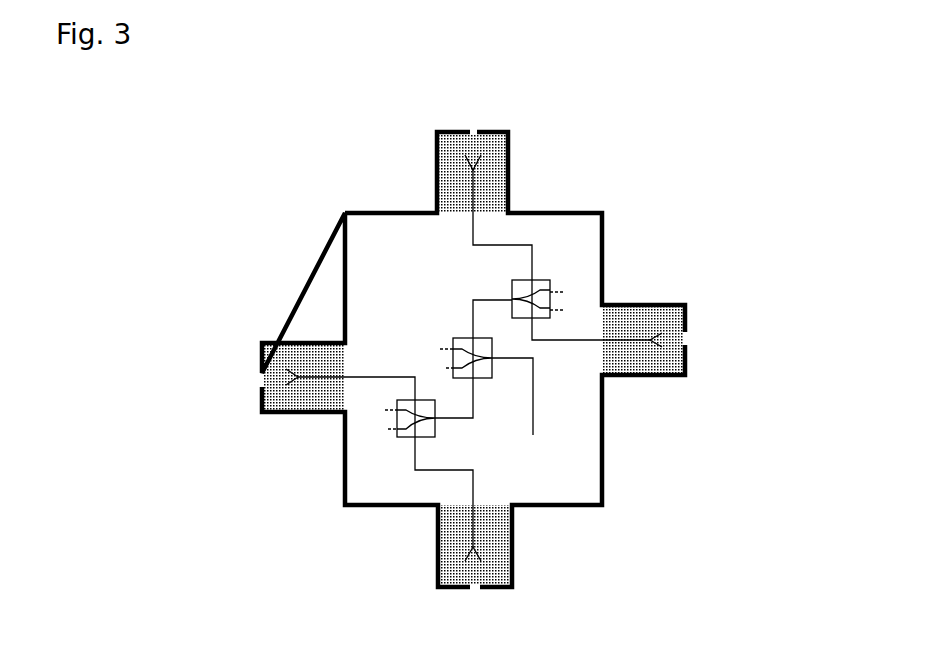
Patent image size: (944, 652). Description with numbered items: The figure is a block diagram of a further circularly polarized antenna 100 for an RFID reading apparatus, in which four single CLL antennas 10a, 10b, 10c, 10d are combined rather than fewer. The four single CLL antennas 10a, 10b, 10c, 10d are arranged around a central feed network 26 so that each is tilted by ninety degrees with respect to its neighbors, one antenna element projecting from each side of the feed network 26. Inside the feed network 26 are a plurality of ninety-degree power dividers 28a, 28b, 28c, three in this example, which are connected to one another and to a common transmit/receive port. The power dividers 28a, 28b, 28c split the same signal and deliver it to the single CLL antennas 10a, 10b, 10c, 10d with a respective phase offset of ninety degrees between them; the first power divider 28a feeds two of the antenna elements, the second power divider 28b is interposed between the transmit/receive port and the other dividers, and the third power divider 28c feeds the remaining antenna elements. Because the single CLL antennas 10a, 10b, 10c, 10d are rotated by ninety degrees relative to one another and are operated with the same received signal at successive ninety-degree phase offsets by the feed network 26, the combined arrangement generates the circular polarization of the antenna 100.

The circularly polarized antenna 100 is at (491, 320).
The feed network 26 is at (473, 359).
The single CLL antenna 10a is at (427, 190).
The single CLL antenna 10b is at (622, 306).
The single CLL antenna 10c is at (511, 529).
The single CLL antenna 10d is at (311, 411).
The 90° power divider 28a is at (529, 284).
The 90° power divider 28b is at (476, 387).
The 90° power divider 28c is at (395, 450).